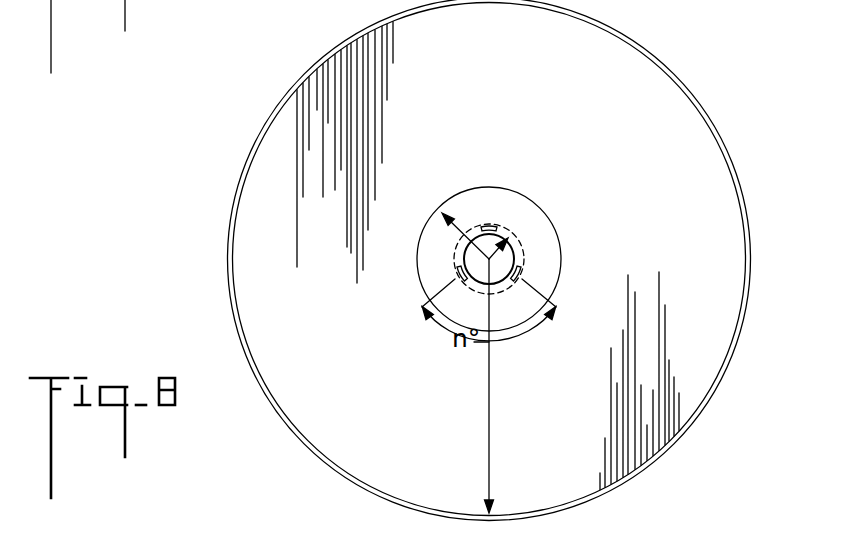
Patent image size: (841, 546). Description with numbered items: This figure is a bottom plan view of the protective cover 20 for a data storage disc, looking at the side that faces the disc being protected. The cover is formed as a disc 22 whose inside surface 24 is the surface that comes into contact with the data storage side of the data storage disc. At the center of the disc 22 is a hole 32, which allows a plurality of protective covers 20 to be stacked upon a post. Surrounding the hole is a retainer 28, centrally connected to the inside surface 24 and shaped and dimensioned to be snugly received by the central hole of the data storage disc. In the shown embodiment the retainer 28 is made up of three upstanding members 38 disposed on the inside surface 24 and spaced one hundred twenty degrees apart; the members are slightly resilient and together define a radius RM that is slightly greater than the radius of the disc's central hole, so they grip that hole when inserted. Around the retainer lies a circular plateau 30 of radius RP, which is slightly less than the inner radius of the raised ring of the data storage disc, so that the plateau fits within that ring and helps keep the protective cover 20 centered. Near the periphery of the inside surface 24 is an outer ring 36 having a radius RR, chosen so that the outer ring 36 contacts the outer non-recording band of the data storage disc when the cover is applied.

The protective cover 20 is at (733, 115).
The disc 22 is at (311, 357).
The inside surface 24 is at (499, 118).
The retainer 28 is at (510, 222).
The circular plateau 30 is at (542, 277).
The hole 32 is at (470, 263).
The outer ring 36 is at (249, 160).
The upstanding members 38 is at (463, 273).
The radius of circular plateau RP is at (466, 242).
The radius defined by upstanding members RM is at (518, 258).
The radius of outer ring RR is at (490, 430).